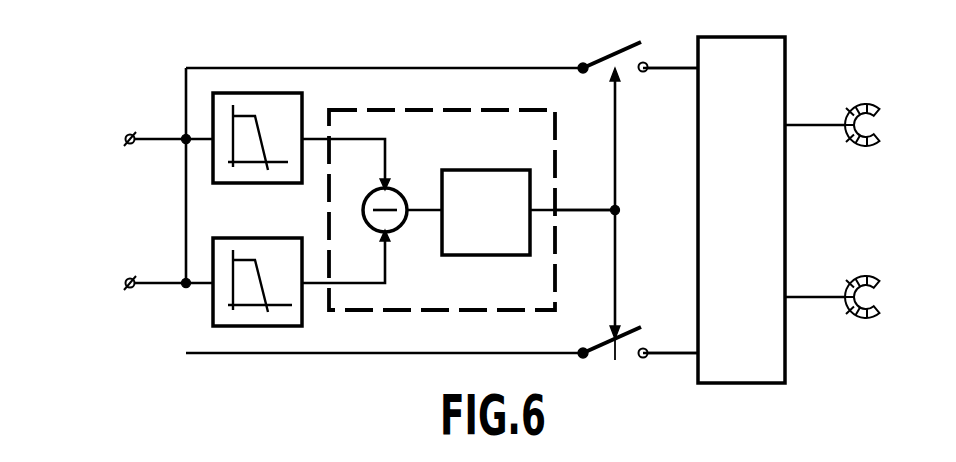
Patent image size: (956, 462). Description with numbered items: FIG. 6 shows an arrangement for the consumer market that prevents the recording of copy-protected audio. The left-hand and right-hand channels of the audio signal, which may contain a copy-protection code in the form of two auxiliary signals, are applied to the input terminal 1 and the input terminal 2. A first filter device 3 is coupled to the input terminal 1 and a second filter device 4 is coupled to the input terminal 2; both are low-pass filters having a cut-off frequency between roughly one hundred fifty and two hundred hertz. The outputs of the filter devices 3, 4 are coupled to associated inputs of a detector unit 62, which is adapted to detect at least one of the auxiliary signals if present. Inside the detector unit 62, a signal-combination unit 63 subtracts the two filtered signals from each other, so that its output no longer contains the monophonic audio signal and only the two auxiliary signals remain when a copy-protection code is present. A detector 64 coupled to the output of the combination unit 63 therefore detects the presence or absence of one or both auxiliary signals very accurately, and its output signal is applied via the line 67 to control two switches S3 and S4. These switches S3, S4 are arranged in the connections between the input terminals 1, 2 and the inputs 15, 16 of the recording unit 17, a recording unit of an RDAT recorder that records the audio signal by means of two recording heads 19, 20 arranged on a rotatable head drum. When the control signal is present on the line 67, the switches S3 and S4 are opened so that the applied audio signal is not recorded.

The input terminal 1 is at (126, 133).
The input terminal 2 is at (130, 277).
The first filter device 3 is at (212, 171).
The second filter device 4 is at (212, 263).
The input of recording unit 15 is at (697, 68).
The input of recording unit 16 is at (697, 352).
The recording unit 17 is at (786, 57).
The recording head 19 is at (860, 152).
The recording head 20 is at (860, 275).
The detector unit 62 is at (392, 105).
The signal-combination unit 63 is at (404, 186).
The detector 64 is at (502, 170).
The line 67 is at (578, 208).
The switch S3 is at (612, 48).
The switch S4 is at (613, 361).